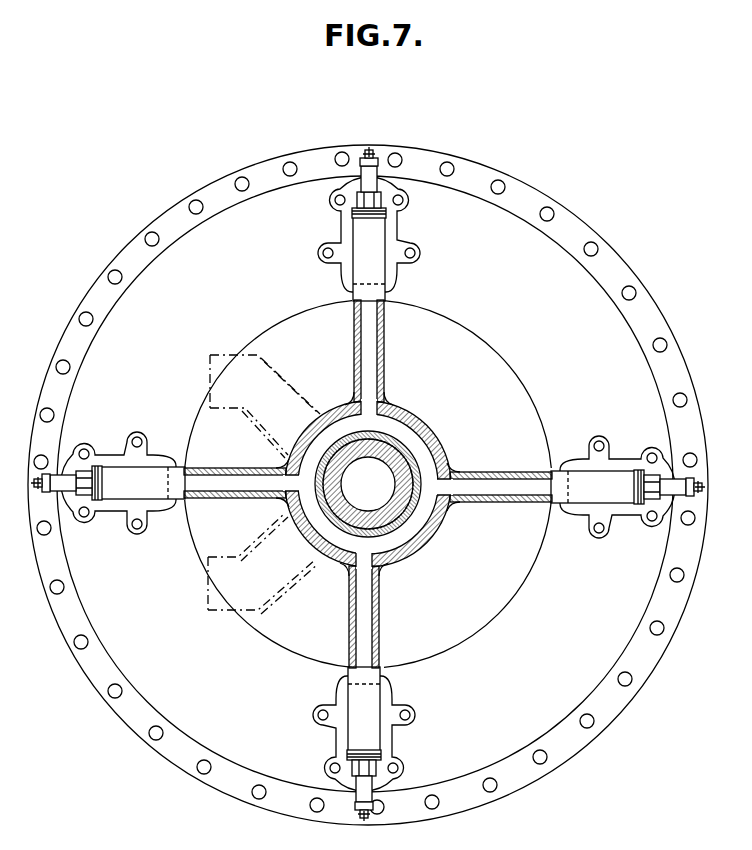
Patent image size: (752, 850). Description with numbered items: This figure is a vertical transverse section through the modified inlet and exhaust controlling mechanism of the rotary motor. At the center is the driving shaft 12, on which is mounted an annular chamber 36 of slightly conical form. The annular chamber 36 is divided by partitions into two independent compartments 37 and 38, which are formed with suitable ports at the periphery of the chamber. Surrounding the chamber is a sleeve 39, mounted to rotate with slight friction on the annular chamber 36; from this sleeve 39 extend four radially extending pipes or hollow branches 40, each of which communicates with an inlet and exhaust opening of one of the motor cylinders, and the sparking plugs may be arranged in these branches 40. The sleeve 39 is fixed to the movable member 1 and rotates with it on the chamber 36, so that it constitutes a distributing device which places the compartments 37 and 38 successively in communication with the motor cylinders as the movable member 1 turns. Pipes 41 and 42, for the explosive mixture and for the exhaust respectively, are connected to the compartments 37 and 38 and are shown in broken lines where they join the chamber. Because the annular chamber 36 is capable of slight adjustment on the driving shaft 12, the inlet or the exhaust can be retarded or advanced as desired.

The movable member 1 is at (368, 485).
The driving shaft 12 is at (387, 507).
The annular chamber 36 is at (335, 409).
The compartment 37 is at (317, 452).
The compartment 38 is at (338, 548).
The sleeve 39 is at (285, 458).
The radially extending pipes or hollow branches 40 is at (462, 470).
The pipe for the explosive mixture 41 is at (237, 353).
The pipe for the exhaust 42 is at (228, 553).